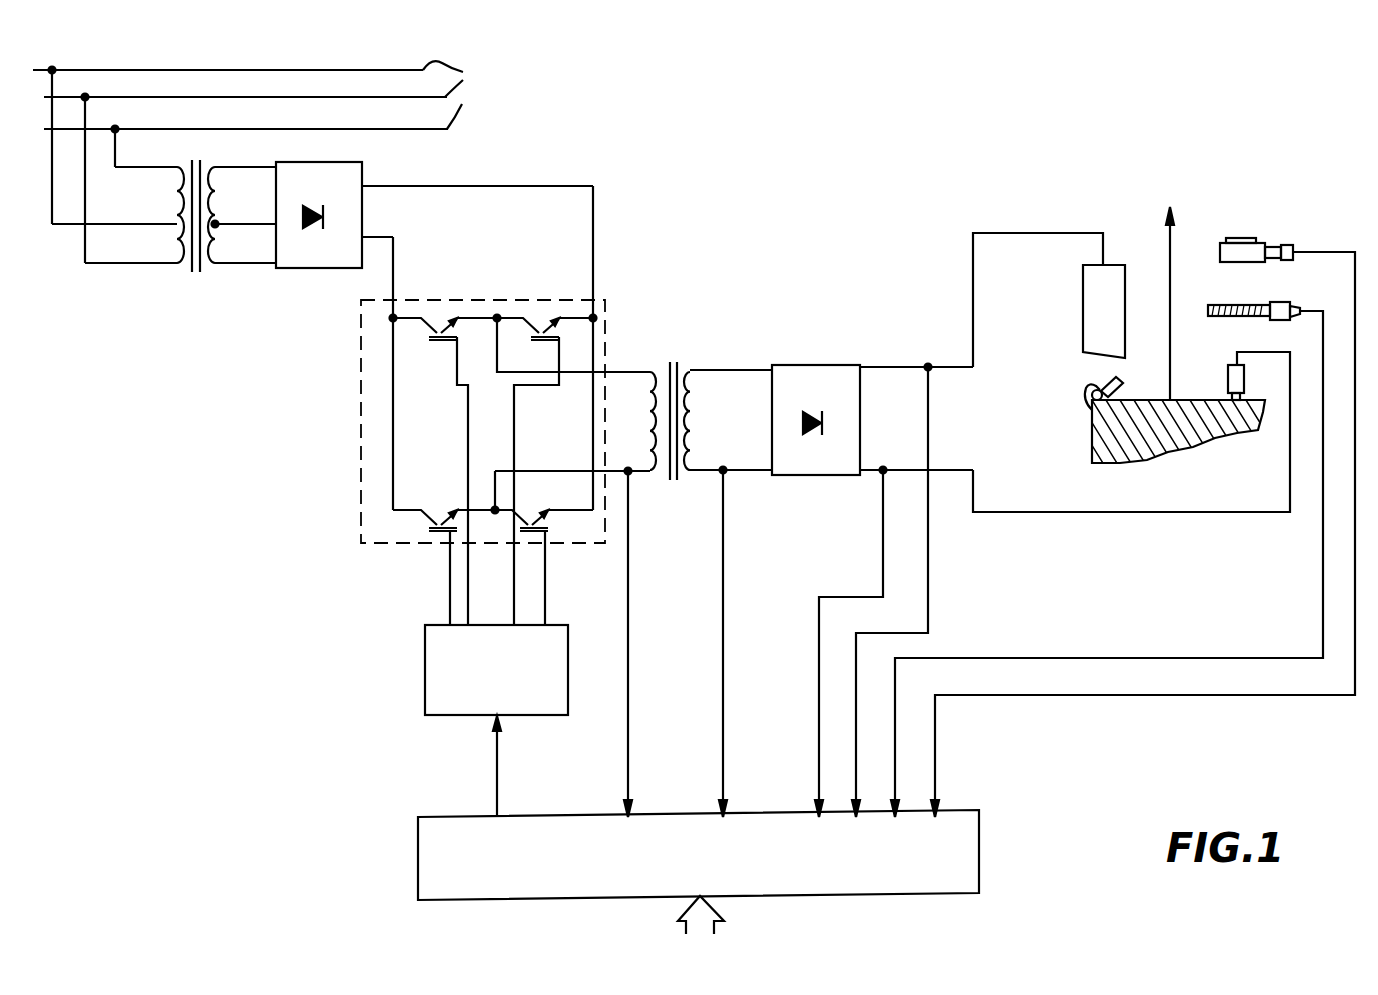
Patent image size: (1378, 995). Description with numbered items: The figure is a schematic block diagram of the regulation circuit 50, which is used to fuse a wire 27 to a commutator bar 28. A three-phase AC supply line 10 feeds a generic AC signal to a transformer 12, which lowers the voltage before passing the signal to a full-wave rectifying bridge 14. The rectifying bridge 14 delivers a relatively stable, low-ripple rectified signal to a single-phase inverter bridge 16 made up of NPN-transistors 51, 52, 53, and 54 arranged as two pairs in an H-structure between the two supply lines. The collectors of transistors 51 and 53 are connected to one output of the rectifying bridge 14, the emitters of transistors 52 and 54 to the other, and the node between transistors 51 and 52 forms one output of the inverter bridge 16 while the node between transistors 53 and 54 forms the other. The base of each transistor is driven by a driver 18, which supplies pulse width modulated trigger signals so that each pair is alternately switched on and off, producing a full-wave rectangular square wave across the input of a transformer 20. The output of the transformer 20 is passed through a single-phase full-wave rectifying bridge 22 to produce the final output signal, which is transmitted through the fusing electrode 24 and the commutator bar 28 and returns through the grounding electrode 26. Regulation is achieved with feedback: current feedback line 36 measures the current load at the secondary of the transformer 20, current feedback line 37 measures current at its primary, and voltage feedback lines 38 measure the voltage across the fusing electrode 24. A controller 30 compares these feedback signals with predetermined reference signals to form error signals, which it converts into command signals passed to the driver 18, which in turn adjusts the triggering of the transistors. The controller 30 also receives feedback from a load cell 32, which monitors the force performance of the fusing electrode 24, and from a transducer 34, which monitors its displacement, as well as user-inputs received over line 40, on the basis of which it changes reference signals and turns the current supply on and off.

The three-phase AC supply line 10 is at (264, 161).
The transformer 12 is at (195, 267).
The full-wave rectifying bridge 14 is at (363, 177).
The single-phase inverter bridge 16 is at (505, 405).
The NPN-transistor 51 is at (438, 344).
The NPN-transistor 52 is at (534, 314).
The NPN-transistor 53 is at (430, 520).
The NPN-transistor 54 is at (548, 527).
The driver 18 is at (425, 671).
The transformer 20 is at (672, 370).
The single-phase full-wave rectifying bridge 22 is at (801, 365).
The fusing electrode 24 is at (1083, 326).
The grounding electrode 26 is at (1228, 372).
The wire 27 is at (1104, 398).
The commutator bar 28 is at (1092, 436).
The controller 30 is at (981, 851).
The load cell 32 is at (1261, 243).
The transducer 34 is at (1268, 304).
The current feedback line 36 is at (734, 560).
The current feedback line 37 is at (628, 625).
The voltage feedback lines 38 is at (884, 575).
The line 40 is at (722, 925).
The regulation circuit 50 is at (266, 604).